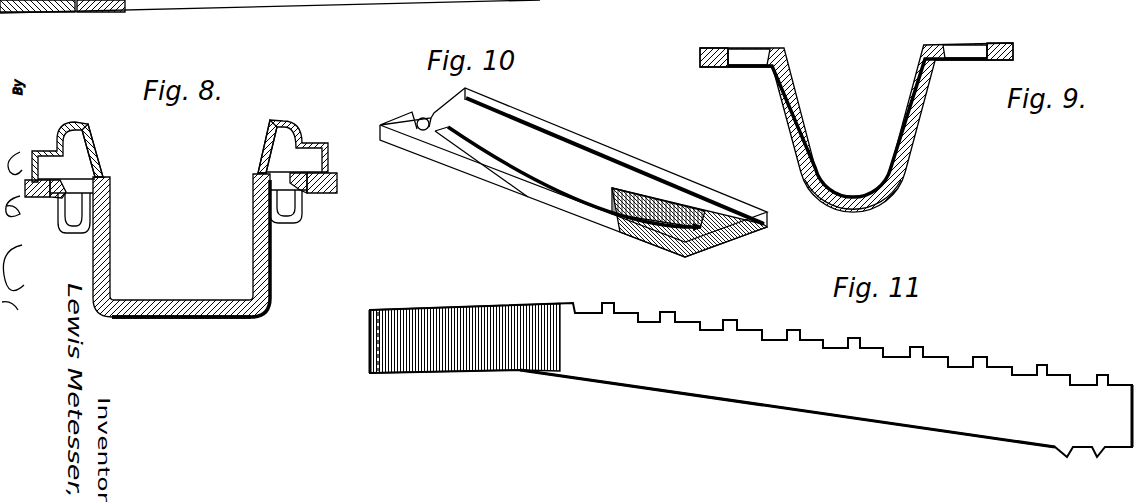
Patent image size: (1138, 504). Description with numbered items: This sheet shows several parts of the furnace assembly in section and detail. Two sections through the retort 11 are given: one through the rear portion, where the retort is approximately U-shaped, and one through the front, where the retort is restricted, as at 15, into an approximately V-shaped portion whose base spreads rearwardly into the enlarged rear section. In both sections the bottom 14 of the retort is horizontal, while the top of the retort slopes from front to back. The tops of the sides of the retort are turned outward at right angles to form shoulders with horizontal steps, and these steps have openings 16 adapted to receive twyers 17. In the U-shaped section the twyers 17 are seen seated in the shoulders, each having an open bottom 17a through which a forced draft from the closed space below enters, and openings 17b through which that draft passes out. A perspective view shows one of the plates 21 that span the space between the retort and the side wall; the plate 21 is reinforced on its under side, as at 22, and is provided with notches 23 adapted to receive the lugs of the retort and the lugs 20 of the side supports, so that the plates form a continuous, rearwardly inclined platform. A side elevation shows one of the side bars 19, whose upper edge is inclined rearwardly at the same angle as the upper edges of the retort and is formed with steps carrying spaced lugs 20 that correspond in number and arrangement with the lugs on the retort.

In FIG. 8, the retort 11 is at (274, 273).
In FIG. 9, the retort 11 is at (926, 154).
In FIG. 8, the bottom of the retort 14 is at (222, 314).
In FIG. 9, the restricted portion of the retort 15 is at (857, 213).
In FIG. 9, the openings 16 is at (750, 49).
In FIG. 8, the twyers 17 is at (43, 153).
In FIG. 8, the open bottoms of the twyers 17a is at (314, 210).
In FIG. 8, the openings of the twyers 17b is at (90, 131).
In FIG. 11, the side bars 19 is at (805, 403).
In FIG. 11, the lugs 20 is at (850, 340).
In FIG. 10, the plates 21 is at (583, 143).
In FIG. 10, the reinforcement 22 is at (562, 187).
In FIG. 10, the notches 23 is at (423, 113).